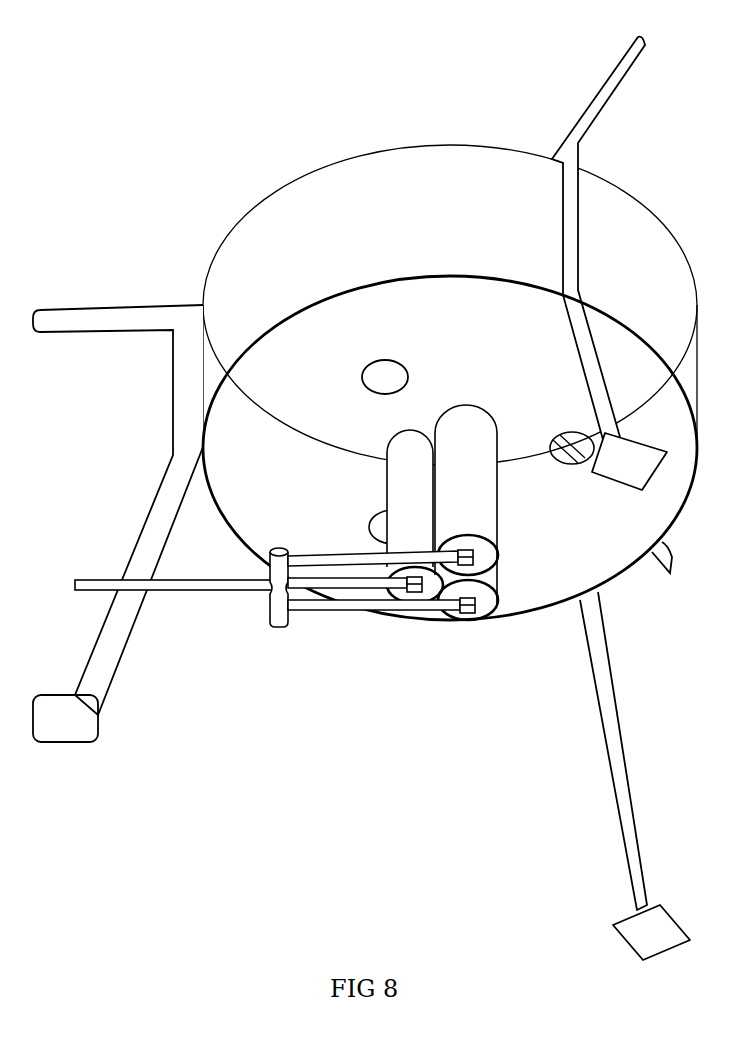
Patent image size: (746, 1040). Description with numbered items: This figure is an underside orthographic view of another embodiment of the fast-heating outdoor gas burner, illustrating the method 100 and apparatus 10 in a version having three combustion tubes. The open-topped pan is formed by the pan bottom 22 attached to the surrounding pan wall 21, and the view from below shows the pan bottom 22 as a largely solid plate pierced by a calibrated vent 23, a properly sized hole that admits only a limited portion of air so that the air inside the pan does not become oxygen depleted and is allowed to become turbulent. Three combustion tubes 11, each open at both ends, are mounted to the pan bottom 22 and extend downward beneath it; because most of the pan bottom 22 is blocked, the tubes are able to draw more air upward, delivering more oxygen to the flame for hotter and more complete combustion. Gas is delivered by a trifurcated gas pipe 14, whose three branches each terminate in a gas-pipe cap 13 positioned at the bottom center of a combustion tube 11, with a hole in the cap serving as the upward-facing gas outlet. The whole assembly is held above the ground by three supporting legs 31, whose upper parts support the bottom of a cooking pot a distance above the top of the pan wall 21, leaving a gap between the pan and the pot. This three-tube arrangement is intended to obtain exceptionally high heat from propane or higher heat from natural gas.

The fast-heating outdoor gas burner method 100 is at (107, 115).
The fast-heating outdoor gas burner apparatus 10 is at (112, 177).
The pan wall 21 is at (332, 183).
The pan bottom 22 is at (297, 478).
The calibrated vent 23 is at (388, 370).
The supporting leg 31 is at (573, 163).
The combustion tube 11 is at (398, 460).
The gas-pipe cap 13 is at (413, 593).
The gas pipe 14 is at (202, 588).